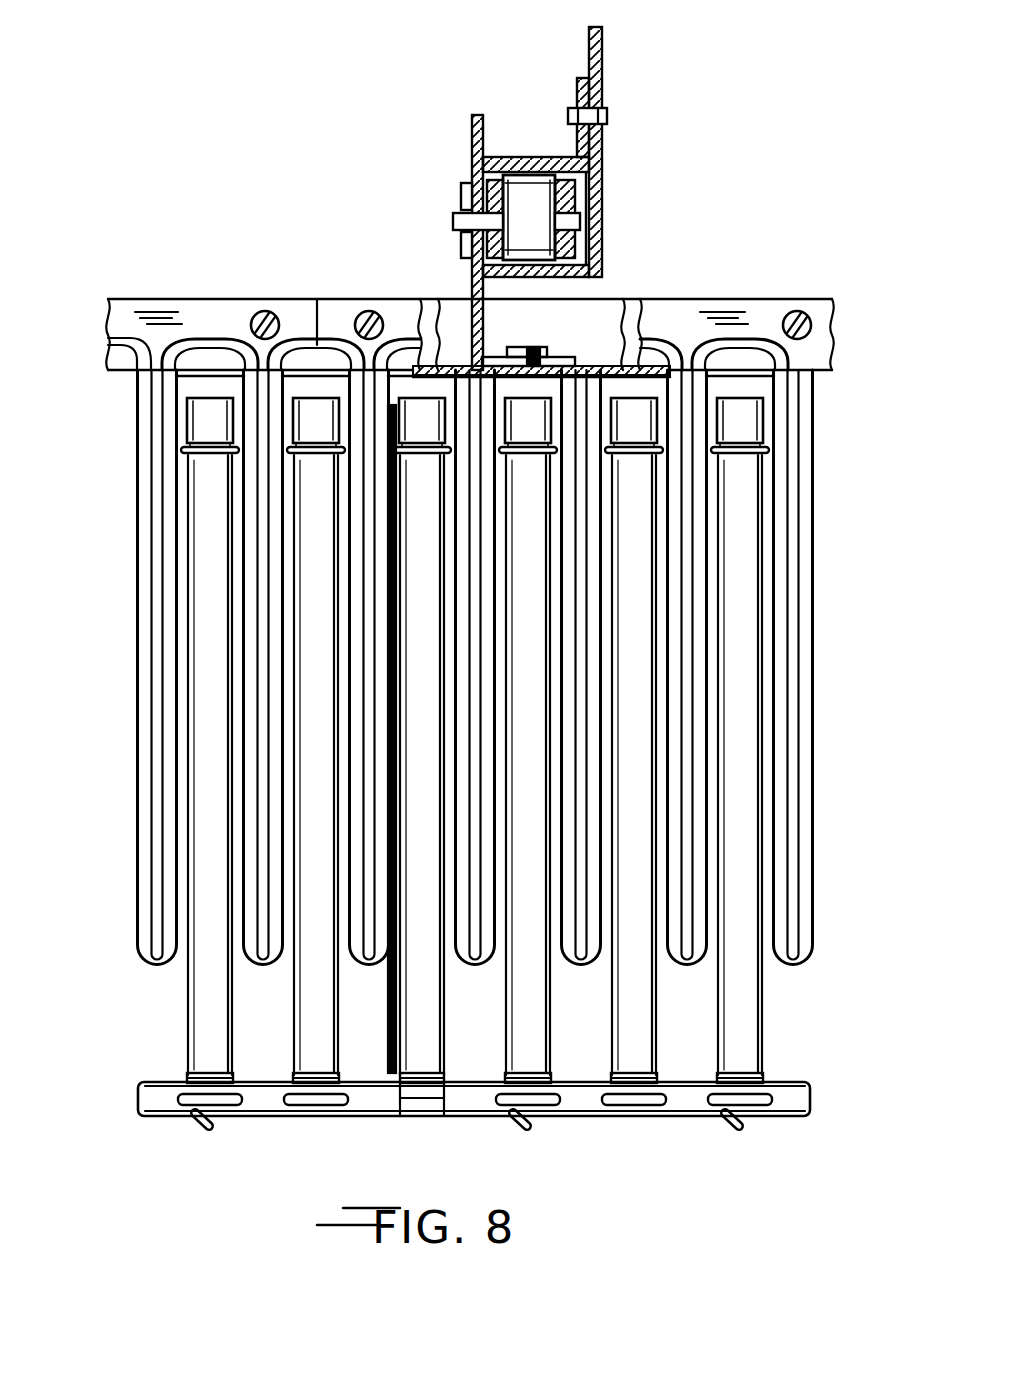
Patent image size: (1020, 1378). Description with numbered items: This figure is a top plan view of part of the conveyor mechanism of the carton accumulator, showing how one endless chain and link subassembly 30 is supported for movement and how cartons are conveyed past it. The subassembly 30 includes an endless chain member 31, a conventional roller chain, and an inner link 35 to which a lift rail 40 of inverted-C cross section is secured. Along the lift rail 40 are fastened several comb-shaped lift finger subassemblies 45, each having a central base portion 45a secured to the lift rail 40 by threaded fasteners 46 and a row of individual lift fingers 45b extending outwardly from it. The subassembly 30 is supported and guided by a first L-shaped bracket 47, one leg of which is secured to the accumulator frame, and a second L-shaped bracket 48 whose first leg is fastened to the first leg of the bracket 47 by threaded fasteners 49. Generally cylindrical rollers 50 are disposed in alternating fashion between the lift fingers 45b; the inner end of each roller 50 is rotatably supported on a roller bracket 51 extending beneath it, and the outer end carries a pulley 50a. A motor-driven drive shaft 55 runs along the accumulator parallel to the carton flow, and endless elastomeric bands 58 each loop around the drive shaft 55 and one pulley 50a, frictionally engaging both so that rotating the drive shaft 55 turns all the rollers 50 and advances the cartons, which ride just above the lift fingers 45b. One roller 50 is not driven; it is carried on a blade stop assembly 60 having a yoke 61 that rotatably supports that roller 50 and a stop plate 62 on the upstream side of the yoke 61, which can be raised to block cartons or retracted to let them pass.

The endless chain and link subassembly 30 is at (452, 180).
The endless chain member 31 is at (540, 190).
The inner link 35 is at (445, 248).
The lift rail 40 is at (470, 325).
The lift finger subassembly 45 is at (294, 260).
The central base portion 45a is at (155, 310).
The lift finger 45b is at (465, 730).
The threaded fastener 46 is at (262, 312).
The first L-shaped bracket 47 is at (597, 52).
The second L-shaped bracket 48 is at (577, 90).
The threaded fastener 49 is at (608, 117).
The roller 50 is at (195, 1012).
The pulley 50a is at (218, 1112).
The roller bracket 51 is at (655, 452).
The drive shaft 55 is at (810, 1100).
The endless elastomeric band 58 is at (185, 1125).
The blade stop assembly 60 is at (387, 1082).
The yoke 61 is at (430, 425).
The stop plate 62 is at (386, 1010).